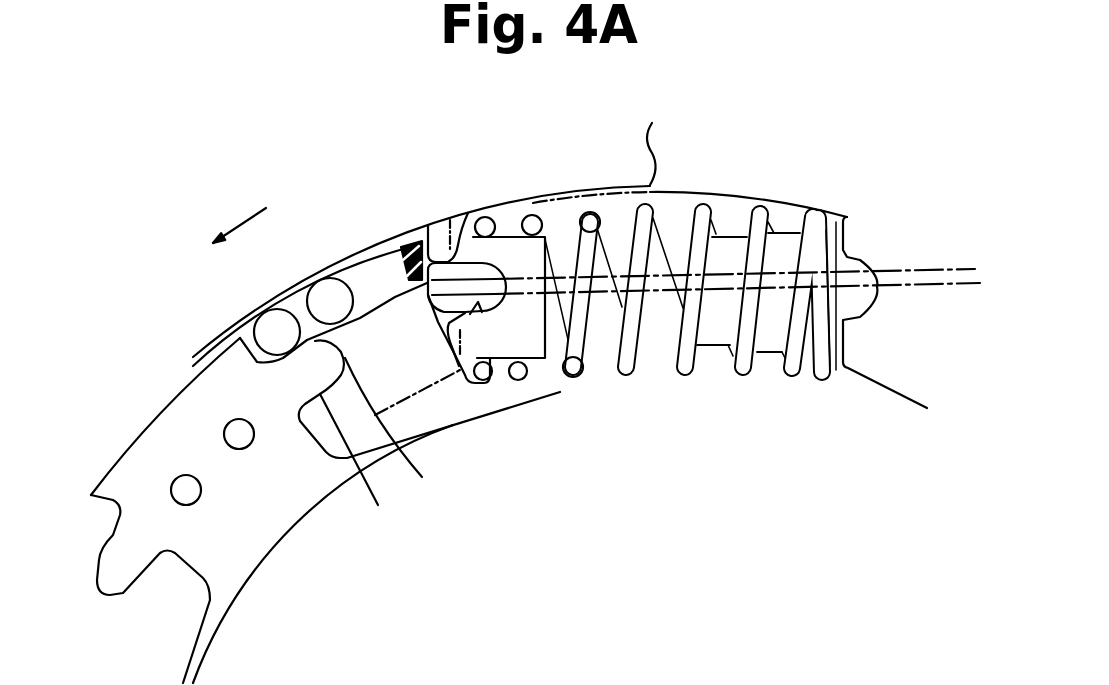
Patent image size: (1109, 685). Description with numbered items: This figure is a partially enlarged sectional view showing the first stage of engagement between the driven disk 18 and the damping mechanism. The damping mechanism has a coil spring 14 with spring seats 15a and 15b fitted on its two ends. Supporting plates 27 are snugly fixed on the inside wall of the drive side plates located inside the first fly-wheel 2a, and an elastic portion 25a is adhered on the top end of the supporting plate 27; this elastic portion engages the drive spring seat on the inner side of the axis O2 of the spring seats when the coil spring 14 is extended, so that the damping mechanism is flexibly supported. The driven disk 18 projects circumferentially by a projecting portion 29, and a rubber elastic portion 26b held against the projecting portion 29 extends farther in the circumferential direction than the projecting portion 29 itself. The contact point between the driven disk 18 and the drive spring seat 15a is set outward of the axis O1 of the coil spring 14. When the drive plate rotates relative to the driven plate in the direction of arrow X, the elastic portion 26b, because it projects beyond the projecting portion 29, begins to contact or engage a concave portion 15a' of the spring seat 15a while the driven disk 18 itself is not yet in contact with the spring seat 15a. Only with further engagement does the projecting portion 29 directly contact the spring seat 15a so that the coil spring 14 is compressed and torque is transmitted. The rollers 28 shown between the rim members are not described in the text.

The first fly-wheel 2a is at (740, 187).
The coil spring 14 is at (532, 215).
The spring seat 15a is at (499, 251).
The concave portion 15a' is at (475, 390).
The spring seat 15b is at (840, 218).
The driven disk 18 is at (240, 487).
The elastic portion 25a is at (410, 243).
The elastic portion 26b is at (402, 428).
The supporting plate 27 is at (365, 262).
The rollers 28 is at (322, 288).
The projecting portion 29 is at (429, 474).
The axis of the coil spring O1 is at (922, 285).
The axis of the spring seats O2 is at (889, 270).
The direction of relative rotation X is at (226, 238).